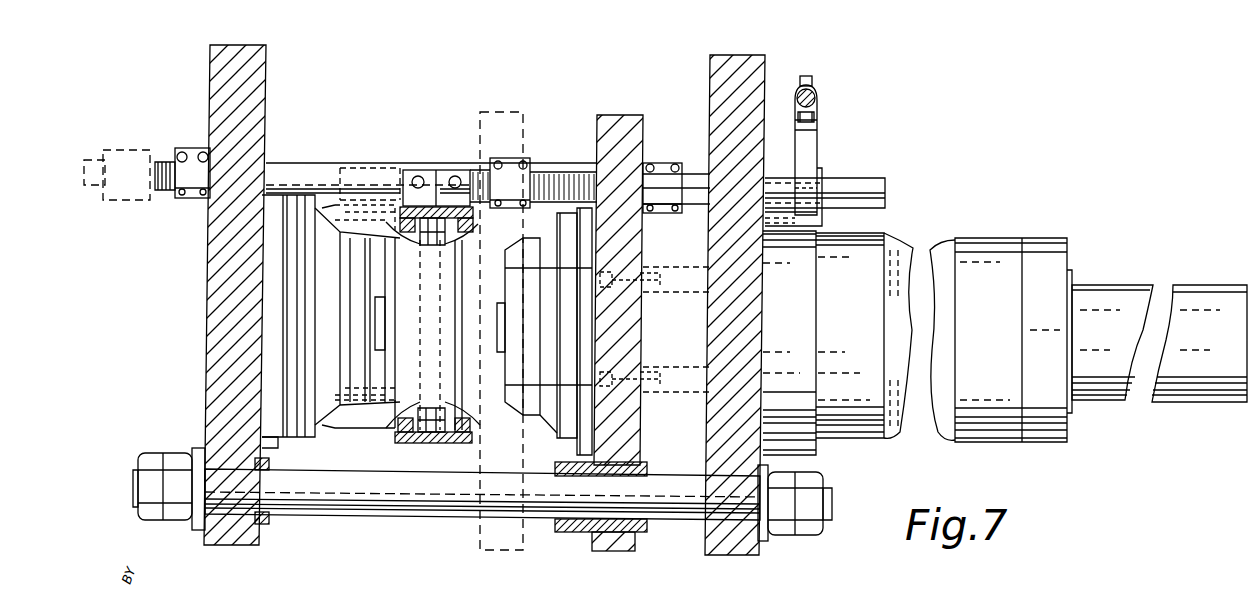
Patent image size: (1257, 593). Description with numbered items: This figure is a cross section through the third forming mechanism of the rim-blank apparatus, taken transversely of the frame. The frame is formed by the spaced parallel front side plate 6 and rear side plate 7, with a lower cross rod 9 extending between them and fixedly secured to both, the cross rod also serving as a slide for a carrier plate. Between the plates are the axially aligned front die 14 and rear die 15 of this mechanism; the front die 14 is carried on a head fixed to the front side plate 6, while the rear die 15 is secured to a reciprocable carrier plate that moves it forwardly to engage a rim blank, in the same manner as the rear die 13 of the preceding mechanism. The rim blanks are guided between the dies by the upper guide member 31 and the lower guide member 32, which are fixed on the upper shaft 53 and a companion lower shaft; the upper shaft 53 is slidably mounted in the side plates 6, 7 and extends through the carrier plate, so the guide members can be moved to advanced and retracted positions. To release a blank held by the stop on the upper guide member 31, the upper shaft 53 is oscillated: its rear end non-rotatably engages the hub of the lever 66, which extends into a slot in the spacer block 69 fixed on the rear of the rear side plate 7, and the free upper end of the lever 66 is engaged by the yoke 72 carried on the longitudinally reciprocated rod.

The front side plate 6 is at (258, 533).
The rear side plate 7 is at (706, 540).
The lower cross rod 9 is at (392, 506).
The rear die 13 is at (815, 96).
The front die 14 is at (310, 225).
The rear die 15 is at (527, 250).
The upper guide member 31 is at (474, 214).
The lower guide member 32 is at (470, 440).
The upper shaft 53 is at (302, 170).
The lever 66 is at (808, 158).
The spacer block 69 is at (822, 212).
The yoke 72 is at (818, 118).